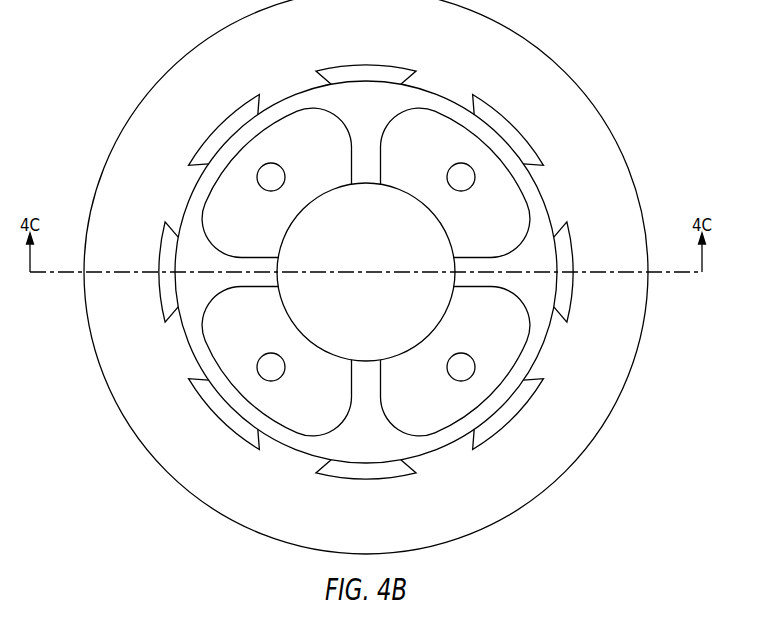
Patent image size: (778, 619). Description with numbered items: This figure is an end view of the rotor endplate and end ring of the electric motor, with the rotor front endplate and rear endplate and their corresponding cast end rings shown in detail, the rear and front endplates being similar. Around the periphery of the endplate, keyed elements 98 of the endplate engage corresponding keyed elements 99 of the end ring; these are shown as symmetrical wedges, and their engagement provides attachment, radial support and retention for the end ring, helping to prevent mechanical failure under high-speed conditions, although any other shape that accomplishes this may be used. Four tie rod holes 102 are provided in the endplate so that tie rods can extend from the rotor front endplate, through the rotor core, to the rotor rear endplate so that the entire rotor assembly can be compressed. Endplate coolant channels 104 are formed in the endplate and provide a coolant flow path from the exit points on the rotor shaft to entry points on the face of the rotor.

The keyed elements of the endplates 98 is at (510, 122).
The keyed elements of the end rings 99 is at (550, 348).
The tie rod holes 102 is at (467, 368).
The endplate coolant channels 104 is at (367, 436).